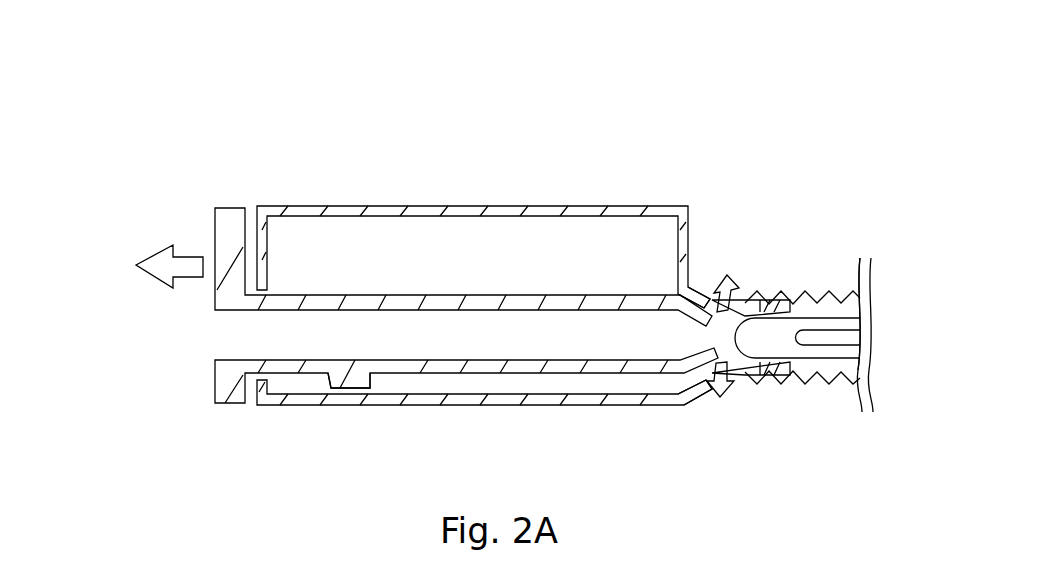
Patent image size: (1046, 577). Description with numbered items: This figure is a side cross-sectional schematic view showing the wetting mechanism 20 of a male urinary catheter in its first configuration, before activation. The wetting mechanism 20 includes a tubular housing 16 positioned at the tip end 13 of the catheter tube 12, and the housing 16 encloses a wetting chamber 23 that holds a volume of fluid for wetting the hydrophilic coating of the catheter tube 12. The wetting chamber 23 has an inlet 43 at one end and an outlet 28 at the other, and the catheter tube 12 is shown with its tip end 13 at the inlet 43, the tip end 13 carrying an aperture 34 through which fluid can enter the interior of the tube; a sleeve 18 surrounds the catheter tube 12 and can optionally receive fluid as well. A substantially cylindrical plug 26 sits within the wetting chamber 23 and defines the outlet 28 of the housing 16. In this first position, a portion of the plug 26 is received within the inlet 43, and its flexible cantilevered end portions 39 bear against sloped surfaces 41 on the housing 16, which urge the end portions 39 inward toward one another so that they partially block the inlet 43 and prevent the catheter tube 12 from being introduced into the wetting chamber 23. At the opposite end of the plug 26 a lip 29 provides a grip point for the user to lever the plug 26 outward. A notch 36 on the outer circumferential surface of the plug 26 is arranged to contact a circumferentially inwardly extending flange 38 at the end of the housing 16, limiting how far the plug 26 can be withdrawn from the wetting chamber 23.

The catheter tube 12 is at (857, 355).
The tip end 13 is at (770, 340).
The tubular housing 16 is at (450, 196).
The sleeve 18 is at (835, 330).
The wetting mechanism 20 is at (654, 145).
The wetting chamber 23 is at (622, 343).
The plug 26 is at (230, 414).
The outlet 28 is at (245, 332).
The lip 29 is at (215, 214).
The aperture 34 is at (857, 295).
The notch 36 is at (353, 389).
The flange 38 is at (266, 392).
The cantilevered end portions 39 is at (701, 292).
The surfaces 41 is at (714, 284).
The inlet 43 is at (745, 298).